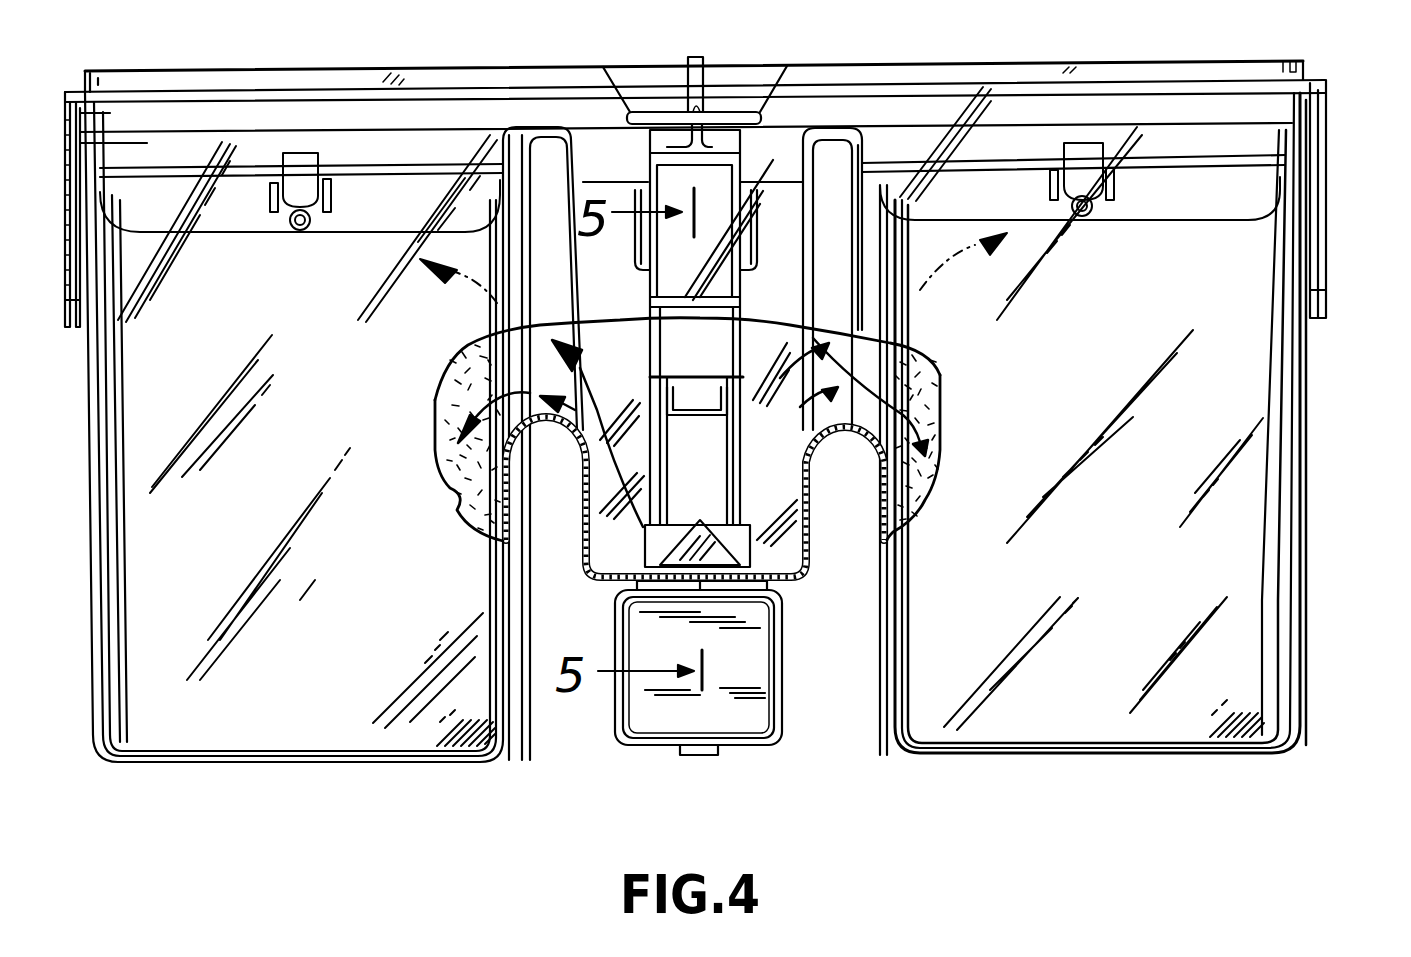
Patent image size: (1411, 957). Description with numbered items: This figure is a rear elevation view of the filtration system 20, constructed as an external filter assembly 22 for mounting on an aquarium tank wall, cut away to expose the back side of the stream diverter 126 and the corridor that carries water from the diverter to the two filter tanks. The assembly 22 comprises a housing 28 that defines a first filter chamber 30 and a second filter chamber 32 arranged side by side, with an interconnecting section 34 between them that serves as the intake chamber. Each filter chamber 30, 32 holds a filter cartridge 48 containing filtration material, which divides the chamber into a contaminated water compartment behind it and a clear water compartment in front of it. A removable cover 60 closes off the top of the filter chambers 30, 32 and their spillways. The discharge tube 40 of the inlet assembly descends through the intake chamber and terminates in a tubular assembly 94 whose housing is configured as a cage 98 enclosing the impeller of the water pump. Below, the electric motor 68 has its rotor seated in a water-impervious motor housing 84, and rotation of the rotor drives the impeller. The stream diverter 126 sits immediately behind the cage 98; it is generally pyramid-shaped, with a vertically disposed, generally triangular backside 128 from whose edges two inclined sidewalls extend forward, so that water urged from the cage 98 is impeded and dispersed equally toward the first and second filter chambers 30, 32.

The filtration system 20 is at (824, 765).
The external filter assembly 22 is at (1312, 656).
The housing 28 is at (1314, 527).
The first filter chamber 30 is at (1040, 690).
The second filter chamber 32 is at (296, 712).
The interconnecting section 34 is at (793, 548).
The discharge tube 40 is at (740, 302).
The filter cartridge 48 is at (930, 390).
The removable cover 60 is at (1318, 70).
The electric motor 68 is at (750, 738).
The motor housing 84 is at (662, 752).
The tubular assembly 94 is at (728, 460).
The cage 98 is at (630, 541).
The stream diverter 126 is at (614, 575).
The backside 128 is at (700, 518).